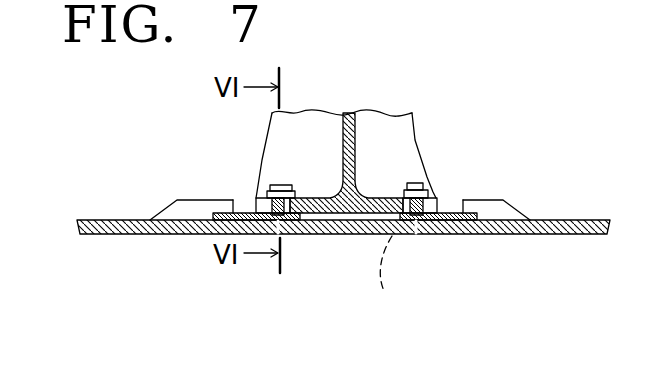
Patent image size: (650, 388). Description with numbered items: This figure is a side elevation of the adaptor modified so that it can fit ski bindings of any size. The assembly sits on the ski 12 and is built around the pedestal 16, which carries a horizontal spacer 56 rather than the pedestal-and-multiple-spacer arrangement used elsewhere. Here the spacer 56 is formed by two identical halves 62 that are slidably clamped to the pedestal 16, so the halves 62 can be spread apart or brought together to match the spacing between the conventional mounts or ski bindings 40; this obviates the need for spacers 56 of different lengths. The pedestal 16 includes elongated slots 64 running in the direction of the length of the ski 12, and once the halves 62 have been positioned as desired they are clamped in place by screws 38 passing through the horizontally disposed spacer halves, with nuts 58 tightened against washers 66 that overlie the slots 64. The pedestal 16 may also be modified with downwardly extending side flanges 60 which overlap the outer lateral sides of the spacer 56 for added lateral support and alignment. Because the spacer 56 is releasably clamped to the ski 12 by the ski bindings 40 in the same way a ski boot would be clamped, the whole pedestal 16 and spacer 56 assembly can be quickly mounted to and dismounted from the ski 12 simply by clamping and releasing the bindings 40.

The ski 12 is at (530, 236).
The pedestal 16 is at (380, 114).
The screws 38 is at (286, 222).
The ski bindings 40 is at (170, 205).
The spacer 56 is at (456, 213).
The nuts 58 is at (292, 185).
The side flanges 60 is at (388, 295).
The halves 62 is at (240, 213).
The slots 64 is at (262, 200).
The washers 66 is at (316, 198).